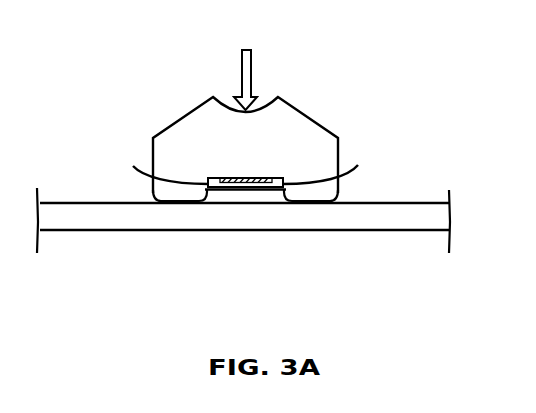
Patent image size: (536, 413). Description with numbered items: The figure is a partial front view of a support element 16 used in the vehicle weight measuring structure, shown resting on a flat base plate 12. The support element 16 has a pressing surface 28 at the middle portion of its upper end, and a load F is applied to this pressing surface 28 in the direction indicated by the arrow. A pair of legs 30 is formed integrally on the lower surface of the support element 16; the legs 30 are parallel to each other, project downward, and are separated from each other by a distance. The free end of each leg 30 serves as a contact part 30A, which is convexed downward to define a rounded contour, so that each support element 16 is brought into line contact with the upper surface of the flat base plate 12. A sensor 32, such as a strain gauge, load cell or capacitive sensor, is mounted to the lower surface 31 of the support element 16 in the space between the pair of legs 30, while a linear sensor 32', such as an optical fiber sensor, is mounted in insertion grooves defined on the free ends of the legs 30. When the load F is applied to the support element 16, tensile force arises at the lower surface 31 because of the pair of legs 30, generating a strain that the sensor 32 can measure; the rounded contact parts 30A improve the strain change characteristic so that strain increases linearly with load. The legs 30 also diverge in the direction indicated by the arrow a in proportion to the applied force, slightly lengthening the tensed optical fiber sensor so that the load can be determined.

The flat base plate 12 is at (272, 238).
The support element 16 is at (346, 131).
The pressing surface 28 is at (270, 98).
The legs 30 is at (180, 200).
The contact parts 30A is at (152, 192).
The lower surface 31 is at (217, 178).
The sensor 32 is at (252, 158).
The linear sensor 32' is at (245, 233).
The load F is at (245, 67).
The direction of leg divergence a is at (244, 176).